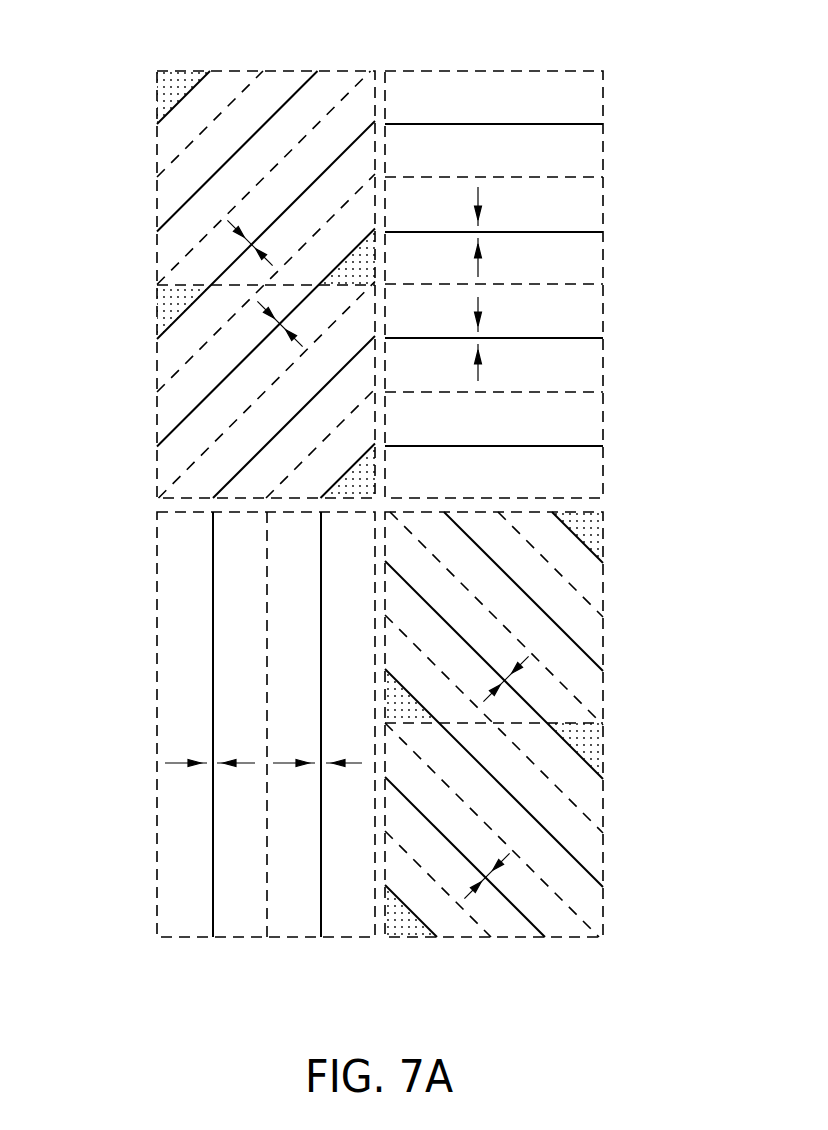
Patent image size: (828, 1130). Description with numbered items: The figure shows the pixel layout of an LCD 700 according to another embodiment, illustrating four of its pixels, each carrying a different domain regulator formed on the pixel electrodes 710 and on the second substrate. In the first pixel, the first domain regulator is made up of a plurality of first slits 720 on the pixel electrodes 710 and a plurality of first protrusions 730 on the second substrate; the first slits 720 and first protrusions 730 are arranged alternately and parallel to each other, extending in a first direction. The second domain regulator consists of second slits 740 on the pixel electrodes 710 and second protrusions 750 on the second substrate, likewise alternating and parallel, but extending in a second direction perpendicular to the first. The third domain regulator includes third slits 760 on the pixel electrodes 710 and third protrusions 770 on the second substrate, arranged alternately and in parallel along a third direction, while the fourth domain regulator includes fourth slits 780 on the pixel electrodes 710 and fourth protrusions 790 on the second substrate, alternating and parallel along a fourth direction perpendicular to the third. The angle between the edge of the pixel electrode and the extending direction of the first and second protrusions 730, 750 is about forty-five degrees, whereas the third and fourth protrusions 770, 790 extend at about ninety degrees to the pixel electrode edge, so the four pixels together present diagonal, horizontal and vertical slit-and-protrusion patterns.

The LCD 700 is at (107, 90).
The pixel electrodes 710 is at (264, 85).
The first slits 720 is at (228, 110).
The first protrusions 730 is at (320, 72).
The second slits 740 is at (567, 902).
The second protrusions 750 is at (540, 920).
The third slits 760 is at (603, 177).
The third protrusions 770 is at (603, 124).
The fourth slits 780 is at (267, 913).
The fourth protrusions 790 is at (320, 917).